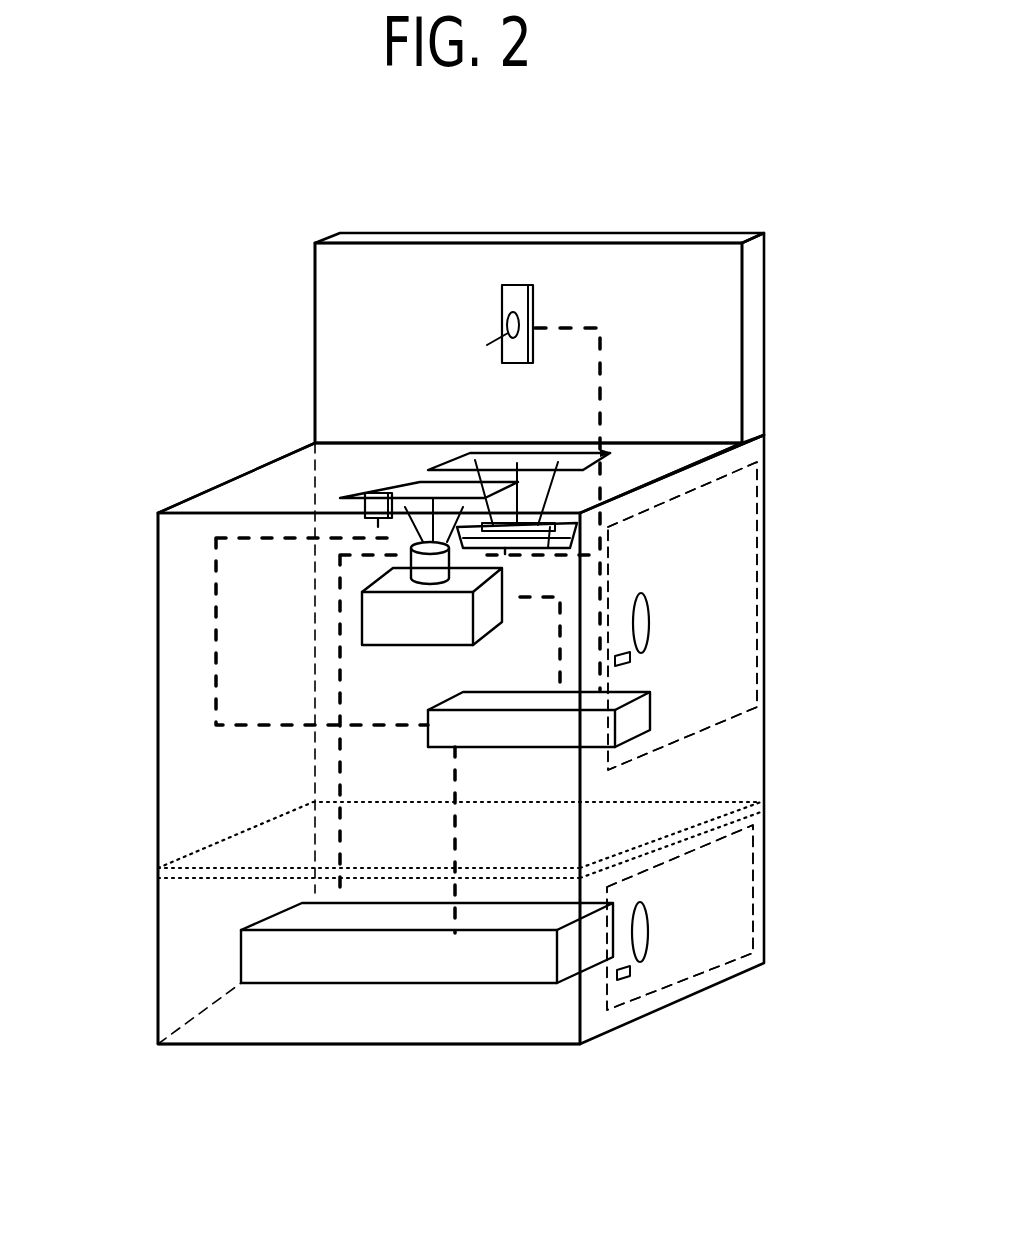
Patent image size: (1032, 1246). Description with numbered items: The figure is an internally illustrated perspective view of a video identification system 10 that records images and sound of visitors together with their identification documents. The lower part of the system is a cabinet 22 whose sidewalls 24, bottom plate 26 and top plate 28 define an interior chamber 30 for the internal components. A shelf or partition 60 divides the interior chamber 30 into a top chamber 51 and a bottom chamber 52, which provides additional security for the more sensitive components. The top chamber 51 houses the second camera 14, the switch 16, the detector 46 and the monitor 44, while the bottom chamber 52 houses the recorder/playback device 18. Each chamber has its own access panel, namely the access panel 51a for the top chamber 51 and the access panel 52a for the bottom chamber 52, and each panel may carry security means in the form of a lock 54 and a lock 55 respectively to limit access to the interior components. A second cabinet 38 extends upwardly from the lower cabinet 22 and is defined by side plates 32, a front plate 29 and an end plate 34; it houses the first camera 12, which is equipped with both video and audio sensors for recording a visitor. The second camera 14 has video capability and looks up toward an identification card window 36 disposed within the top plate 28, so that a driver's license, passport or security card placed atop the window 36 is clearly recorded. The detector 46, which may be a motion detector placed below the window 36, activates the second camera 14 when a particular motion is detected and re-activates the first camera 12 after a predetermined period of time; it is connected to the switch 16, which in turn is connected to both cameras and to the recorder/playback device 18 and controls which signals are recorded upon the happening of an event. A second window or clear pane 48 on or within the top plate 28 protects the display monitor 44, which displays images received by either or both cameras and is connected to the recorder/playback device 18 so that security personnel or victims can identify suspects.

The video identification system 10 is at (749, 198).
The first camera 12 is at (537, 285).
The second camera 14 is at (422, 620).
The switch 16 is at (633, 723).
The recorder/playback device 18 is at (267, 965).
The cabinet 22 is at (156, 512).
The sidewalls 24 is at (240, 795).
The bottom plate 26 is at (415, 1038).
The top plate 28 is at (665, 460).
The front plate 29 is at (680, 352).
The interior chamber 30 is at (428, 698).
The side plates 32 is at (755, 293).
The end plate 34 is at (490, 237).
The identification card window 36 is at (438, 493).
The second cabinet 38 is at (315, 245).
The monitor 44 is at (573, 537).
The detector 46 is at (343, 500).
The clear pane 48 is at (505, 463).
The top chamber 51 is at (523, 775).
The access panel 51a is at (667, 565).
The bottom chamber 52 is at (508, 893).
The access panel 52a is at (702, 885).
The lock 54 is at (630, 660).
The lock 55 is at (632, 973).
The partition 60 is at (280, 850).